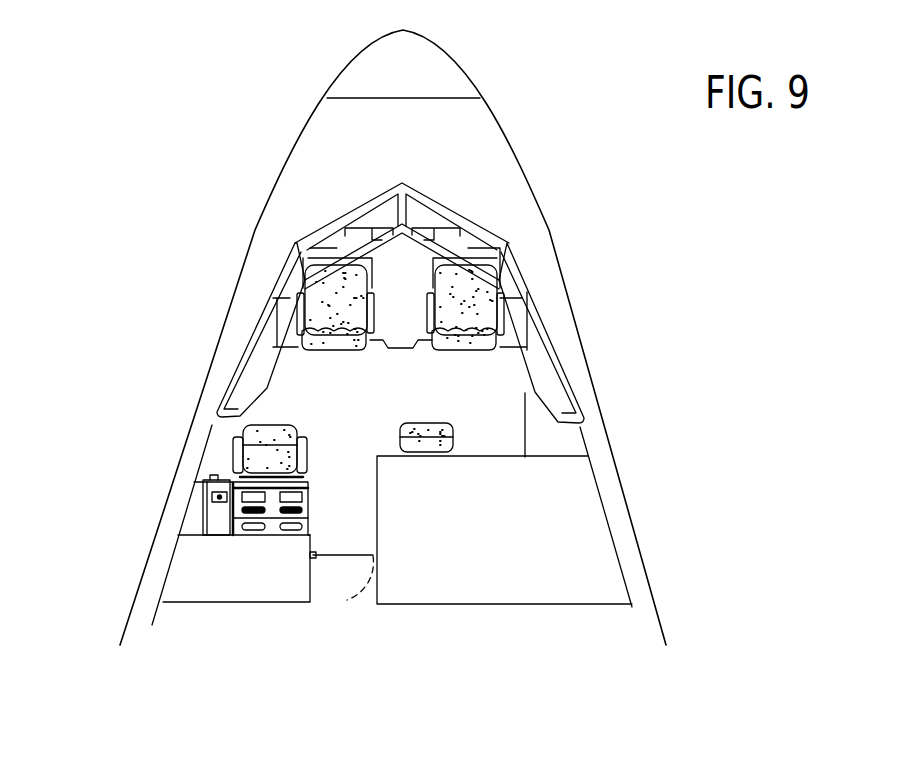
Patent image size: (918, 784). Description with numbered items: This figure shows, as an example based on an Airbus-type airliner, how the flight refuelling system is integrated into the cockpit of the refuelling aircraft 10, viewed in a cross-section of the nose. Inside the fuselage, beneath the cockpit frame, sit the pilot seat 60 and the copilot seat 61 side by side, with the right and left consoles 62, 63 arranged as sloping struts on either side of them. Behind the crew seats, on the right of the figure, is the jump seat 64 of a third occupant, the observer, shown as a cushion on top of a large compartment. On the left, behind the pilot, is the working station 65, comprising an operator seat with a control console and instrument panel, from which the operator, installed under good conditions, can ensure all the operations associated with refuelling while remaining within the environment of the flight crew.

The refuelling aircraft 10 is at (312, 107).
The pilot seat 60 is at (337, 303).
The copilot seat 61 is at (470, 303).
The right console 62 is at (260, 347).
The left console 63 is at (535, 356).
The jump seat 64 is at (455, 442).
The working station 65 is at (225, 470).